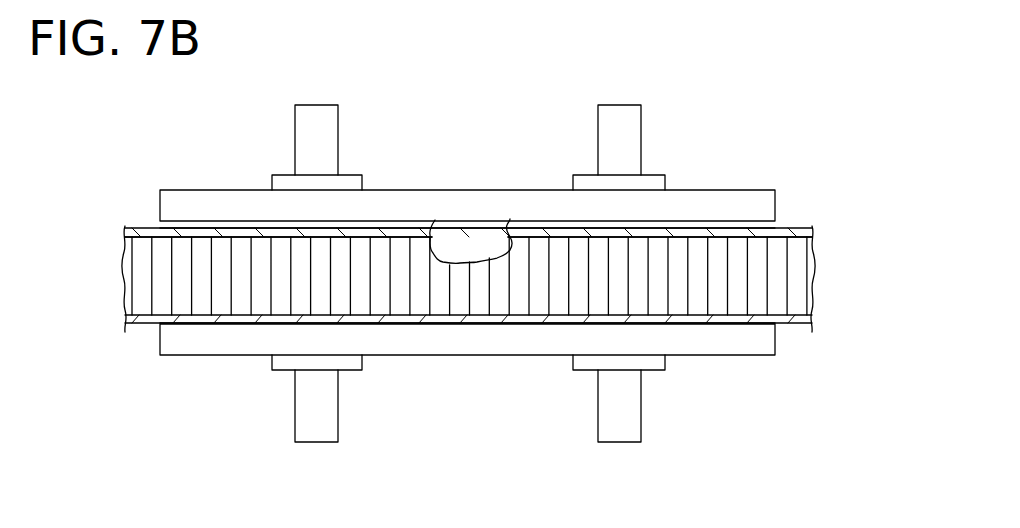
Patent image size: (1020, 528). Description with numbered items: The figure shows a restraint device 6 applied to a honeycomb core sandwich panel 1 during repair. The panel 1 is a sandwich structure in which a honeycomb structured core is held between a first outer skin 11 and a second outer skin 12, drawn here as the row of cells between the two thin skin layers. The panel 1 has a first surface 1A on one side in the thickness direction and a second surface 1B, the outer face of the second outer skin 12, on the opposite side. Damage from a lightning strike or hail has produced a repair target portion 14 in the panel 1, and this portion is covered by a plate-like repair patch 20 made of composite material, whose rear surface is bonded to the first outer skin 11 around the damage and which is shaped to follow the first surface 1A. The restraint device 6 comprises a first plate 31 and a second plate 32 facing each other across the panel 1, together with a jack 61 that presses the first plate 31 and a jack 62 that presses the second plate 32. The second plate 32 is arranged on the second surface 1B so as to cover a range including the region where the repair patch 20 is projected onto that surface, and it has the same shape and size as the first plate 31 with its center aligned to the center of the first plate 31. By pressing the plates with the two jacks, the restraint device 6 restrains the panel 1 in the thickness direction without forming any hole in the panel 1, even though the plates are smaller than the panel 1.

The honeycomb core sandwich panel 1 is at (138, 226).
The first surface 1A is at (683, 228).
The second surface 1B is at (678, 327).
The first outer skin 11 is at (735, 228).
The second outer skin 12 is at (730, 327).
The repair target portion 14 is at (490, 223).
The repair patch 20 is at (435, 220).
The first plate 31 is at (538, 190).
The second plate 32 is at (520, 356).
The restraint device 6 is at (486, 276).
The jack 61 is at (315, 104).
The jack 62 is at (315, 444).